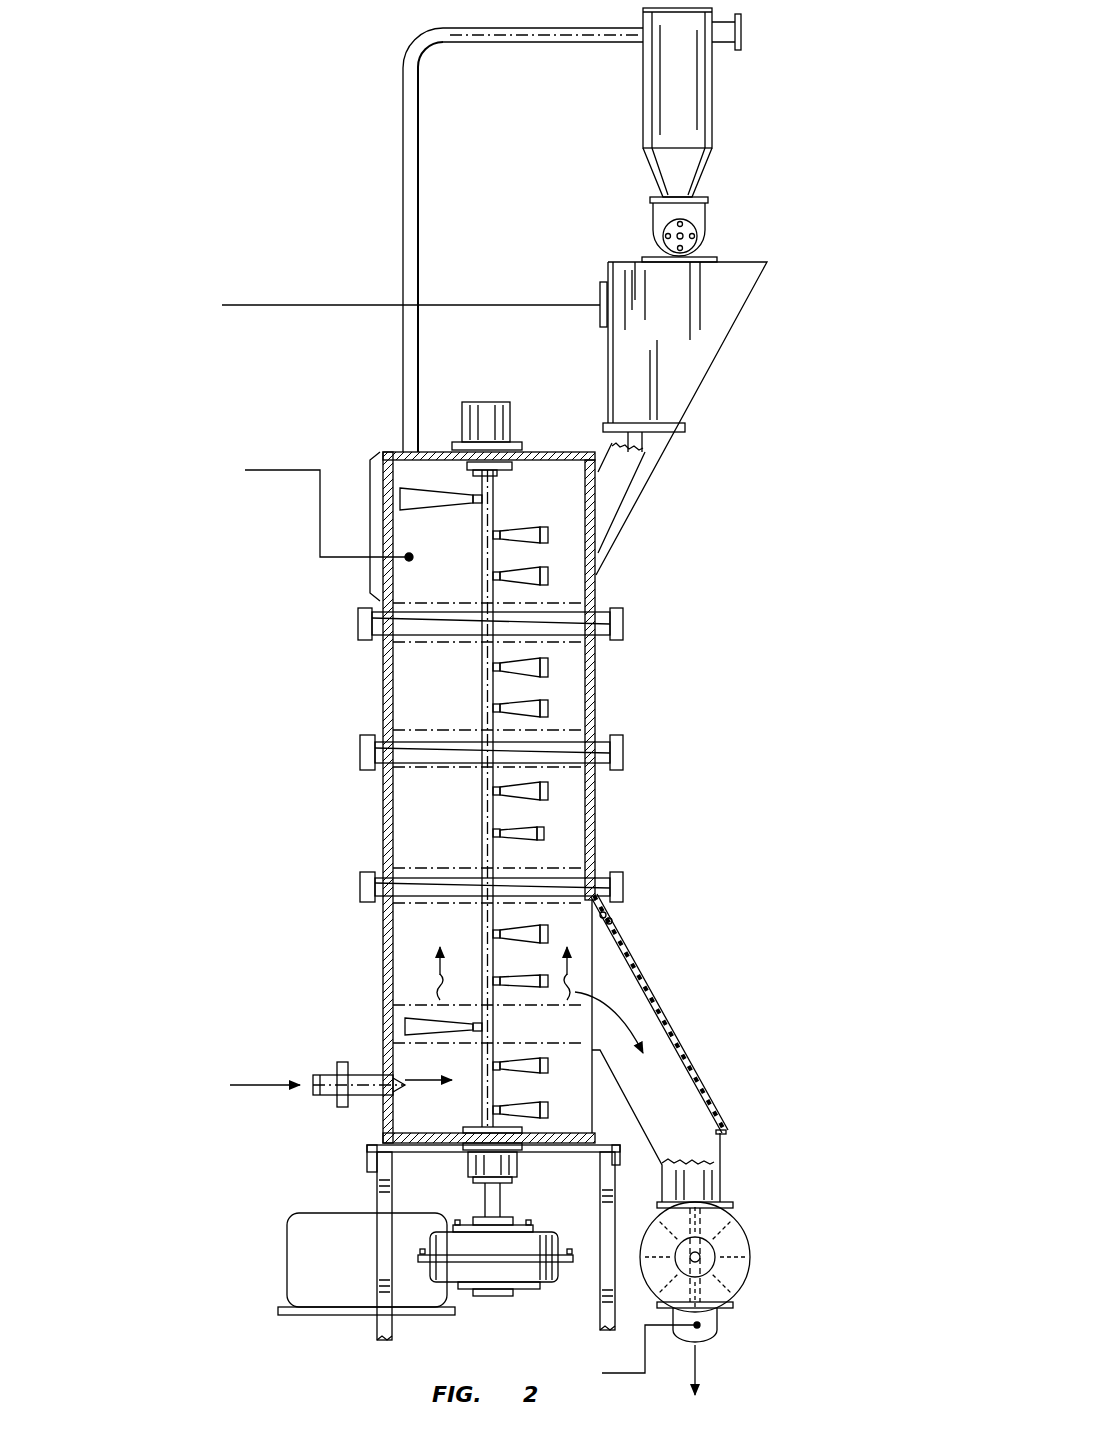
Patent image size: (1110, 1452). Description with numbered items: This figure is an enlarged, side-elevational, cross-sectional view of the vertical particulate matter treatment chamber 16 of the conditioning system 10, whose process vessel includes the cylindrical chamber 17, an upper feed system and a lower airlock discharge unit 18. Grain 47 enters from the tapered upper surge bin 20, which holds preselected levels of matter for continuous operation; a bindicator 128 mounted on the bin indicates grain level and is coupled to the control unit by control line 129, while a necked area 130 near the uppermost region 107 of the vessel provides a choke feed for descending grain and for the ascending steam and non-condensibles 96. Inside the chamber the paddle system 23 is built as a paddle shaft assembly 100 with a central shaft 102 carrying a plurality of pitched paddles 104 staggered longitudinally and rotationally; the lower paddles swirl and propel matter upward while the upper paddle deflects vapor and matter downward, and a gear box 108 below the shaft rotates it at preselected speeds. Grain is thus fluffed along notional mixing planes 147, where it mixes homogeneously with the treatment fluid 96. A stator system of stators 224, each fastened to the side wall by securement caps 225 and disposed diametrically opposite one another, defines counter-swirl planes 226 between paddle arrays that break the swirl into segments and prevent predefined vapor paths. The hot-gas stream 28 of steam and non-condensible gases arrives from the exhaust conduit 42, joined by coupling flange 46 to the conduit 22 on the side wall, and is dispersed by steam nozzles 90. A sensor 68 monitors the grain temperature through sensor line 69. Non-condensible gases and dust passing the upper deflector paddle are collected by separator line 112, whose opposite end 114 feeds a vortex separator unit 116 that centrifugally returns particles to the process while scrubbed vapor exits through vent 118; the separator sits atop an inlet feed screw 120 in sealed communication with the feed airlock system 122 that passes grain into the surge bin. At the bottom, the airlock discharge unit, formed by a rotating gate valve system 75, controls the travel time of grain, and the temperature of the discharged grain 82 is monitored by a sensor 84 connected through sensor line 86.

The particulate matter conditioning system 10 is at (680, 697).
The treatment chamber 16 is at (385, 850).
The cylindrical chamber 17 is at (713, 231).
The airlock discharge unit 18 is at (745, 1210).
The surge bin 20 is at (700, 355).
The conduit 22 is at (372, 1072).
The paddle system 23 is at (505, 402).
The hot-gas stream 28 is at (250, 1085).
The exhaust conduit 42 is at (315, 1092).
The coupling flange 46 is at (340, 1107).
The grain 47 is at (602, 490).
The sensor 68 is at (408, 553).
The sensor line 69 is at (323, 478).
The rotating gate valve system 75 is at (737, 1270).
The discharged grain 82 is at (695, 1368).
The sensor 84 is at (717, 1322).
The sensor line 86 is at (645, 1373).
The steam nozzle 90 is at (405, 1080).
The treatment fluid 96 is at (440, 975).
The paddle shaft assembly 100 is at (342, 1295).
The central shaft 102 is at (500, 810).
The paddles 104 is at (412, 492).
The uppermost region 107 is at (370, 529).
The gear box 108 is at (530, 1283).
The separator line 112 is at (405, 255).
The opposite end 114 is at (619, 29).
The vortex separator unit 116 is at (712, 100).
The vent 118 is at (741, 30).
The inlet feed screw 120 is at (705, 205).
The airlock system 122 is at (701, 240).
The bindicator 128 is at (600, 301).
The control line 129 is at (493, 305).
The necked area 130 is at (620, 520).
The notional mixing planes 147 is at (619, 1040).
The stators 224 is at (580, 612).
The securement caps 225 is at (624, 617).
The counter-swirl plane 226 is at (418, 600).